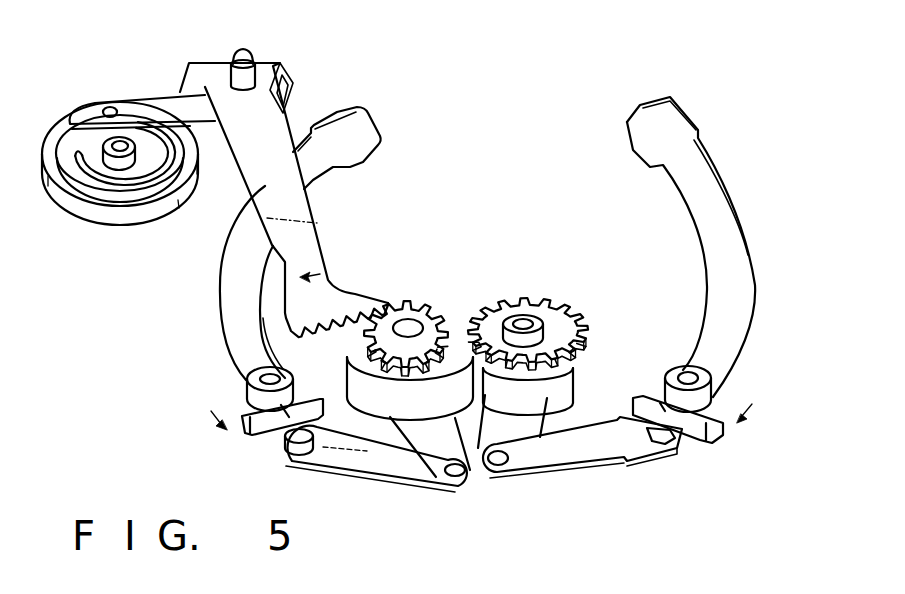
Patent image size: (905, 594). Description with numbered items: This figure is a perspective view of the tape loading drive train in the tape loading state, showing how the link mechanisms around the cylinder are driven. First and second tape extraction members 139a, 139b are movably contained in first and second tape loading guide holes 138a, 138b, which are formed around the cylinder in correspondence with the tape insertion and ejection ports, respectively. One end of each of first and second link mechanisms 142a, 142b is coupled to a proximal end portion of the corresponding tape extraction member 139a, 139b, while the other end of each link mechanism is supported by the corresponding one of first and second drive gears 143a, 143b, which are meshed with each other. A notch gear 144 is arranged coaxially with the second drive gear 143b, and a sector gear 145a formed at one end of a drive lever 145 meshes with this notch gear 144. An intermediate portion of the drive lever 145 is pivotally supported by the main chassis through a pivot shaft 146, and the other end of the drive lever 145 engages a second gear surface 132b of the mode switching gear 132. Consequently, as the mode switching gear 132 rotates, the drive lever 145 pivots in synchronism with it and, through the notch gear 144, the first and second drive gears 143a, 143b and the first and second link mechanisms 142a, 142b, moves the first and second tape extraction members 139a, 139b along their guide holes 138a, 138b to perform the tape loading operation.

The mode switching gear 132 is at (140, 228).
The second gear surface 132b is at (117, 183).
The first tape loading guide hole 138a is at (733, 213).
The second tape loading guide hole 138b is at (313, 175).
The first tape extraction member 139a is at (717, 390).
The second tape extraction member 139b is at (240, 400).
The first link mechanism 142a is at (577, 463).
The second link mechanism 142b is at (367, 473).
The first drive gear 143a is at (577, 313).
The second drive gear 143b is at (430, 303).
The notch gear 144 is at (440, 323).
The drive lever 145 is at (272, 130).
The sector gear 145a is at (360, 297).
The pivot shaft 146 is at (233, 57).